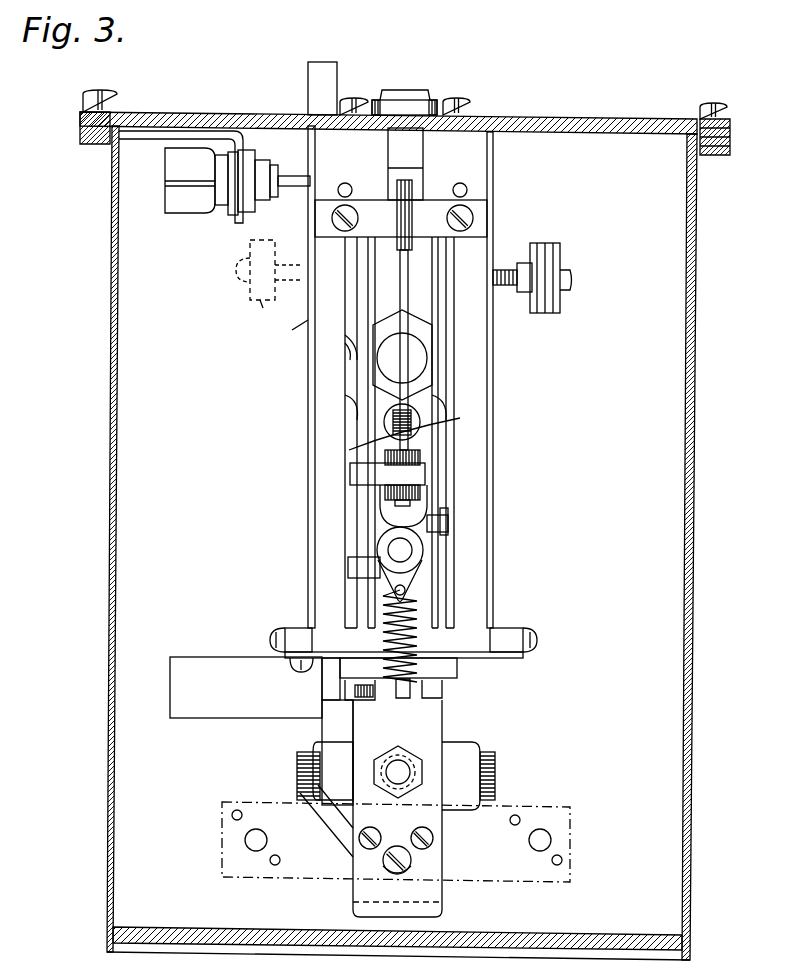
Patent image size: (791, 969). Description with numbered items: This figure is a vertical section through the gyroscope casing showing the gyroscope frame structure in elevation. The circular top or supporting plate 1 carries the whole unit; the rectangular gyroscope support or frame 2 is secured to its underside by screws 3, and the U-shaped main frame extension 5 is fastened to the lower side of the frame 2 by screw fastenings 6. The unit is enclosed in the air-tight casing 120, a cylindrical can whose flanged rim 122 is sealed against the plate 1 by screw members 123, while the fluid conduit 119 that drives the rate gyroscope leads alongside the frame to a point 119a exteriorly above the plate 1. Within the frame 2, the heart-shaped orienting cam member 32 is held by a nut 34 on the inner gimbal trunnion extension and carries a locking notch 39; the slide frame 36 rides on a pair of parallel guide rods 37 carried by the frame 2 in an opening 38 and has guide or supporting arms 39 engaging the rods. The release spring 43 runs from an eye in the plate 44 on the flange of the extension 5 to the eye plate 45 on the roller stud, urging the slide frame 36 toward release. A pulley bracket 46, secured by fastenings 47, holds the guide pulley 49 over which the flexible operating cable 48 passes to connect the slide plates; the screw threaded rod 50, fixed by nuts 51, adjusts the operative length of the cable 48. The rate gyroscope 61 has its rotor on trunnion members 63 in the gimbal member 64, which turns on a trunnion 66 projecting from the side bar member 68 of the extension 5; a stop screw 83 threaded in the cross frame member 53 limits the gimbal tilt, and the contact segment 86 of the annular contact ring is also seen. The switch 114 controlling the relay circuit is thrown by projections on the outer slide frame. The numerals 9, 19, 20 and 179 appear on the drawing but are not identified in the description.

The circular top or supporting plate 1 is at (603, 100).
The gyroscope support or frame 2 is at (493, 165).
The screws 3 is at (465, 110).
The U-shaped open frame or main frame extension 5 is at (445, 900).
The screw fastenings 6 is at (445, 690).
The screw 9 is at (358, 100).
The nut 19 is at (437, 92).
The adjusting knob 20 is at (252, 308).
The heart-shaped orienting cam member 32 is at (420, 318).
The nut 34 is at (470, 410).
The slide frame 36 is at (448, 522).
The guide rods 37 is at (352, 402).
The opening 38 is at (348, 340).
The guide or supporting arms 39 is at (352, 476).
The release spring 43 is at (420, 648).
The plate 44 is at (457, 672).
The eye plate 45 is at (412, 585).
The pulley bracket 46 is at (430, 210).
The fastenings 47 is at (475, 216).
The flexible operating connection or cable 48 is at (398, 300).
The guide pulley 49 is at (395, 186).
The screw threaded rod 50 is at (420, 440).
The nuts 51 is at (424, 462).
The cross frame member 53 is at (495, 630).
The rate gyroscope 61 is at (333, 752).
The trunnion members 63 is at (297, 772).
The gimbal member 64 is at (462, 755).
The bearing member or trunnion 66 is at (404, 760).
The side bar member 68 is at (445, 713).
The stop screw 83 is at (285, 625).
The contact segment 86 is at (520, 632).
The switch 114 is at (222, 210).
The fluid conduit 119 is at (306, 346).
The point exteriorly above the plate 119a is at (325, 93).
The casing or air tight closure 120 is at (690, 760).
The flanged rim 122 is at (731, 150).
The screw members 123 is at (710, 108).
The box 179 is at (218, 705).